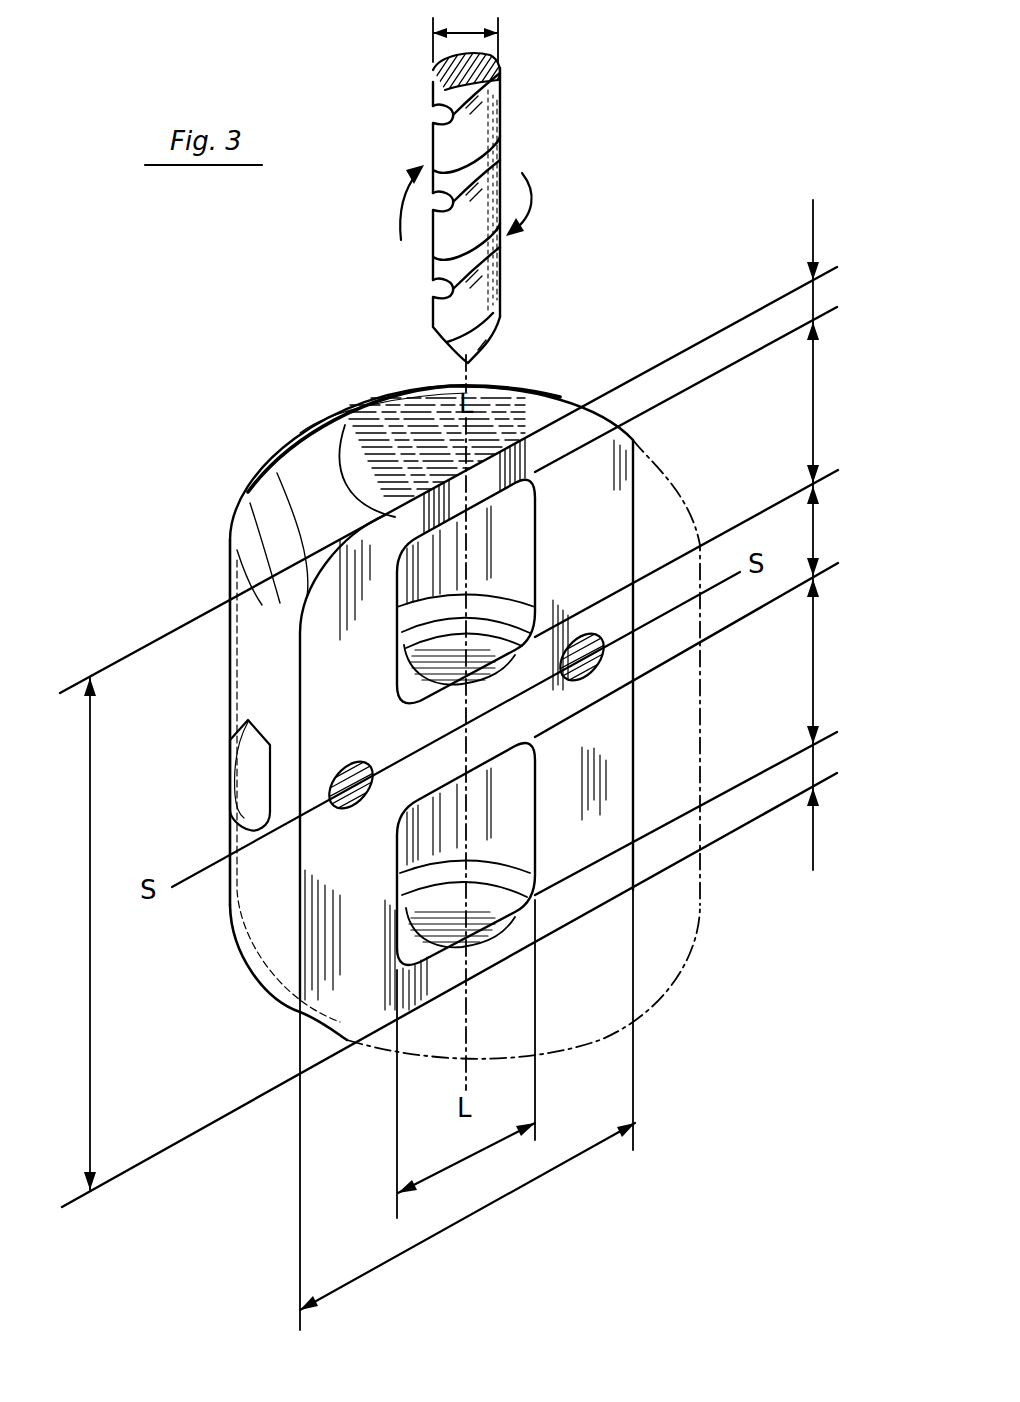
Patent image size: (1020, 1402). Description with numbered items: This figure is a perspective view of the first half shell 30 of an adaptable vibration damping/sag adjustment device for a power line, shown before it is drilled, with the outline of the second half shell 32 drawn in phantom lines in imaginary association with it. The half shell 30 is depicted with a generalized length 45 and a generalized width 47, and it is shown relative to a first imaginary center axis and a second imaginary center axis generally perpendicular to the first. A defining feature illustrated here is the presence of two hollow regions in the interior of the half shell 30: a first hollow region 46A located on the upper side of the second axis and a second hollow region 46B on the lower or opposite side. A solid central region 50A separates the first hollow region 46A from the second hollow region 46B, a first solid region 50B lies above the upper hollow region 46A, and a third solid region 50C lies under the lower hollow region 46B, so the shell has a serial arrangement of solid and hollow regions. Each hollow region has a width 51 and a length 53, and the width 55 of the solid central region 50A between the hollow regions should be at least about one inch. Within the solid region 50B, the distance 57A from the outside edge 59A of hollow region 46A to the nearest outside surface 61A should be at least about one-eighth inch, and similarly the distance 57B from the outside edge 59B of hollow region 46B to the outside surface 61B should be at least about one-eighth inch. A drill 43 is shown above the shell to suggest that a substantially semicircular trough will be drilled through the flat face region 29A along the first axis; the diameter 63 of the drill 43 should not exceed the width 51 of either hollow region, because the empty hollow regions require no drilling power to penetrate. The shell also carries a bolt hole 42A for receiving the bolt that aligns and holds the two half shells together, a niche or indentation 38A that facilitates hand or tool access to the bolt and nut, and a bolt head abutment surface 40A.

The first half shell 30 is at (590, 413).
The second half shell 32 is at (672, 982).
The flat face region 29A is at (357, 920).
The niche or indentation 38A is at (255, 762).
The bolt head abutment surface 40A is at (270, 783).
The bolt hole 42A is at (367, 760).
The drill 43 is at (492, 122).
The length 45 is at (95, 928).
The first hollow region 46A is at (498, 565).
The second hollow region 46B is at (500, 823).
The width 47 is at (483, 1210).
The solid central region 50A is at (425, 735).
The first solid region 50B is at (400, 520).
The third solid region 50C is at (495, 957).
The hollow region width 51 is at (472, 1158).
The hollow region length 53 is at (813, 412).
The width of solid region 50A 55 is at (815, 530).
The distance 57A is at (813, 300).
The distance 57B is at (813, 763).
The outside edge of hollow region 46A 59A is at (415, 527).
The outside edge of hollow region 46B 59B is at (515, 950).
The outside surface 61A is at (405, 525).
The outside surface 61B is at (453, 978).
The drill diameter 63 is at (470, 33).